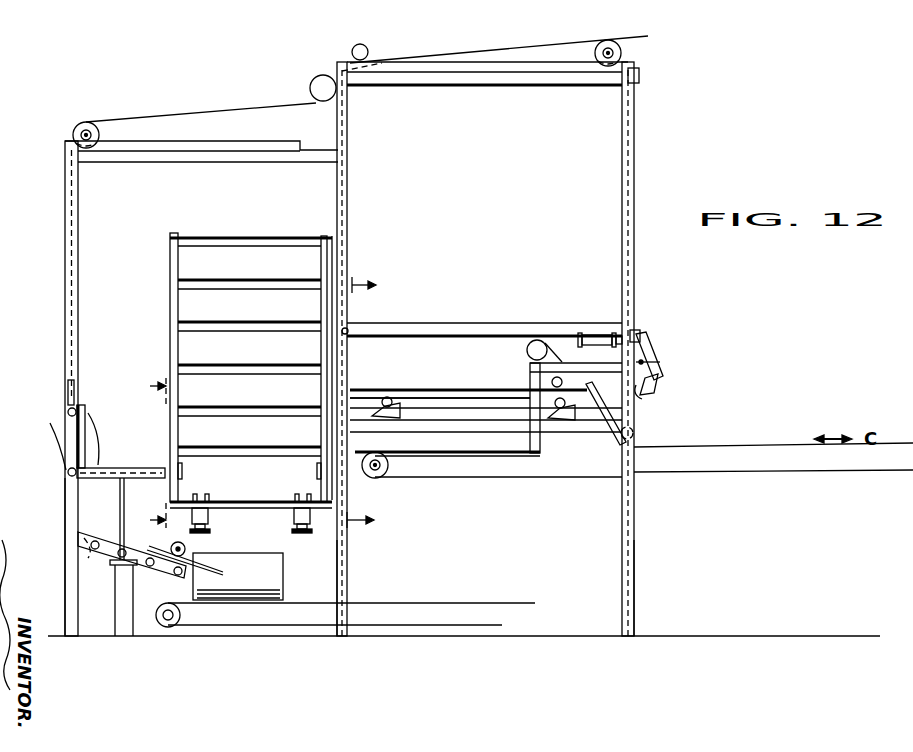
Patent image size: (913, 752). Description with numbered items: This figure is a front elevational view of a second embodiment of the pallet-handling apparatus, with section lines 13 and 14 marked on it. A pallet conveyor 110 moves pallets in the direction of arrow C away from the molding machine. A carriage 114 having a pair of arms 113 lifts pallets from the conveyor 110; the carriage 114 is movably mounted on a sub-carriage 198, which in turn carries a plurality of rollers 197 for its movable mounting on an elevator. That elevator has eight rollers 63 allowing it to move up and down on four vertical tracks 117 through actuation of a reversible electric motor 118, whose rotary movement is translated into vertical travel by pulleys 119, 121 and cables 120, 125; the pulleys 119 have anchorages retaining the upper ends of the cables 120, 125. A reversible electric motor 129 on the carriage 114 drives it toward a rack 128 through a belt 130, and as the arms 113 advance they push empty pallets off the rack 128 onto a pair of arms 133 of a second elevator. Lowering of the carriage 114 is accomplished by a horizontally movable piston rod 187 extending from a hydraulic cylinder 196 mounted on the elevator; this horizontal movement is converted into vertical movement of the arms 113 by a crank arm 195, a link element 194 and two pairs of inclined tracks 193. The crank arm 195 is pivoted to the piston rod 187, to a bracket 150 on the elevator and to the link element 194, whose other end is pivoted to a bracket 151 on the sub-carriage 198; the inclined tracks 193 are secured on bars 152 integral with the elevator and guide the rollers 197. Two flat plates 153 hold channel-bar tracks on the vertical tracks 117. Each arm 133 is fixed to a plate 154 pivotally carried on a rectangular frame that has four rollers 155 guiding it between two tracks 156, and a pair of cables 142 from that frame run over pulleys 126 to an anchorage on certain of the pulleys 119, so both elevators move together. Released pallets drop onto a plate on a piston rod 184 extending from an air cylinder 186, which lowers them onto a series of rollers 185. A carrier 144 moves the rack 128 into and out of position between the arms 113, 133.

The pallet conveyor 110 is at (710, 446).
The arms 113 is at (468, 458).
The carriage 114 is at (532, 374).
The vertical tracks 117 is at (343, 547).
The reversible electric motor 118 is at (366, 49).
The pulleys 119 is at (311, 80).
The cable 120 is at (350, 182).
The pulley 121 is at (620, 46).
The cable 125 is at (534, 47).
The pulleys 126 is at (87, 122).
The rack 128 is at (254, 234).
The reversible electric motor 129 is at (527, 350).
The belt 130 is at (560, 358).
The arms 133 is at (118, 467).
The cables 142 is at (188, 112).
The carrier 144 is at (236, 513).
The bracket 150 is at (648, 360).
The bracket 151 is at (647, 400).
The bars 152 is at (454, 426).
The flat plates 153 is at (620, 446).
The plate 154 is at (88, 424).
The rollers 155 is at (68, 412).
The tracks 156 is at (72, 528).
The piston rod 184 is at (121, 497).
The rollers 185 is at (88, 562).
The air cylinder 186 is at (132, 604).
The piston rod 187 is at (641, 333).
The inclined tracks 193 is at (396, 418).
The link element 194 is at (662, 386).
The crank arm 195 is at (650, 348).
The hydraulic cylinder 196 is at (614, 310).
The rollers 197 is at (396, 375).
The sub-carriage 198 is at (452, 375).
The rollers 63 is at (350, 332).
The section line 13 is at (152, 453).
The section line 14 is at (374, 403).